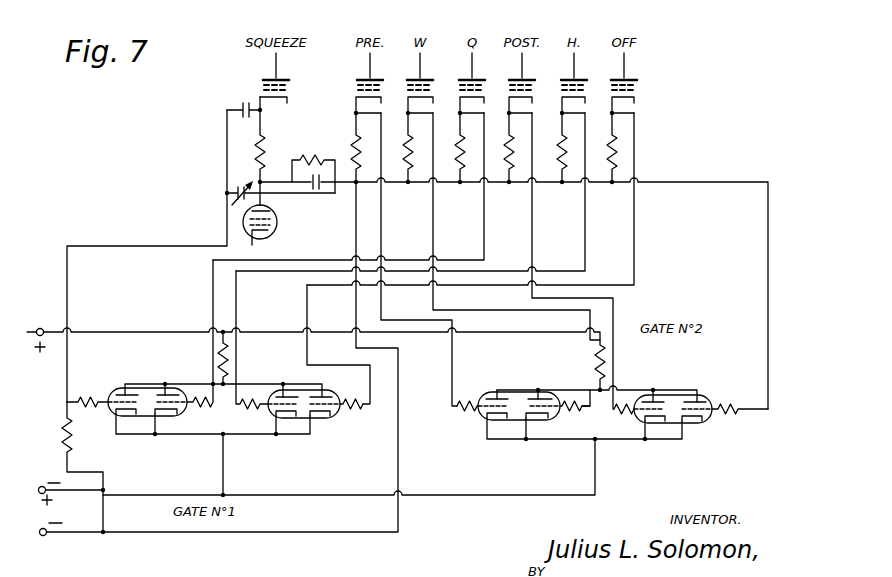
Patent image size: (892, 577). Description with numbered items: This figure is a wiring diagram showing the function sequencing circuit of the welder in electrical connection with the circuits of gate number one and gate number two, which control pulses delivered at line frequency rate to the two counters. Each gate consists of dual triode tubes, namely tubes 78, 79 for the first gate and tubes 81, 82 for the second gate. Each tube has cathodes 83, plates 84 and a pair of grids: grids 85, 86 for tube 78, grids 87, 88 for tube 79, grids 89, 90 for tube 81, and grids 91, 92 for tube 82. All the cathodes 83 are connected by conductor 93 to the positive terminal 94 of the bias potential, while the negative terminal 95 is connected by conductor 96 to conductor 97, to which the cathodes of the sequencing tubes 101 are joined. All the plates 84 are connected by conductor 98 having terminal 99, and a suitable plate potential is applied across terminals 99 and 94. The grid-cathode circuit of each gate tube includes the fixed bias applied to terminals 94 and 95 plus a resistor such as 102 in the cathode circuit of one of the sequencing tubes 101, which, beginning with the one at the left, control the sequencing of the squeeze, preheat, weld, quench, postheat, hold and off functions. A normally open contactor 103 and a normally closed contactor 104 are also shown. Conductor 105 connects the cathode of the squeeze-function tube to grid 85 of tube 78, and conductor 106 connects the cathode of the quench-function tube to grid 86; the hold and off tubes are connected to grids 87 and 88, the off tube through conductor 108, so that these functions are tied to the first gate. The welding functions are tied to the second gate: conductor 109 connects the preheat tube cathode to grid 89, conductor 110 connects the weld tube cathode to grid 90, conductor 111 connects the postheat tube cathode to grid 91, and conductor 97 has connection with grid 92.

The dual triode tube 78 is at (168, 420).
The dual triode tube 79 is at (302, 423).
The dual triode tube 81 is at (517, 424).
The dual triode tube 82 is at (673, 429).
The cathodes 83 is at (126, 417).
The plates 84 is at (125, 383).
The grid 85 is at (98, 395).
The grid 86 is at (187, 381).
The grid 87 is at (283, 385).
The grid 88 is at (322, 420).
The grid 89 is at (482, 398).
The grid 90 is at (557, 397).
The grid 91 is at (645, 394).
The grid 92 is at (720, 404).
The conductor 93 is at (436, 494).
The positive terminal 94 is at (39, 486).
The negative terminal 95 is at (45, 536).
The conductor 96 is at (262, 533).
The conductor 97 is at (696, 182).
The conductor 98 is at (428, 337).
The terminal 99 is at (33, 325).
The sequencing tubes 101 is at (644, 86).
The resistor 102 is at (266, 150).
The normally open contactor 103 is at (243, 100).
The normally closed contactor 104 is at (235, 191).
The conductor 105 is at (175, 246).
The conductor 106 is at (310, 260).
The conductor 108 is at (635, 246).
The conductor 109 is at (381, 231).
The conductor 110 is at (433, 219).
The conductor 111 is at (533, 243).